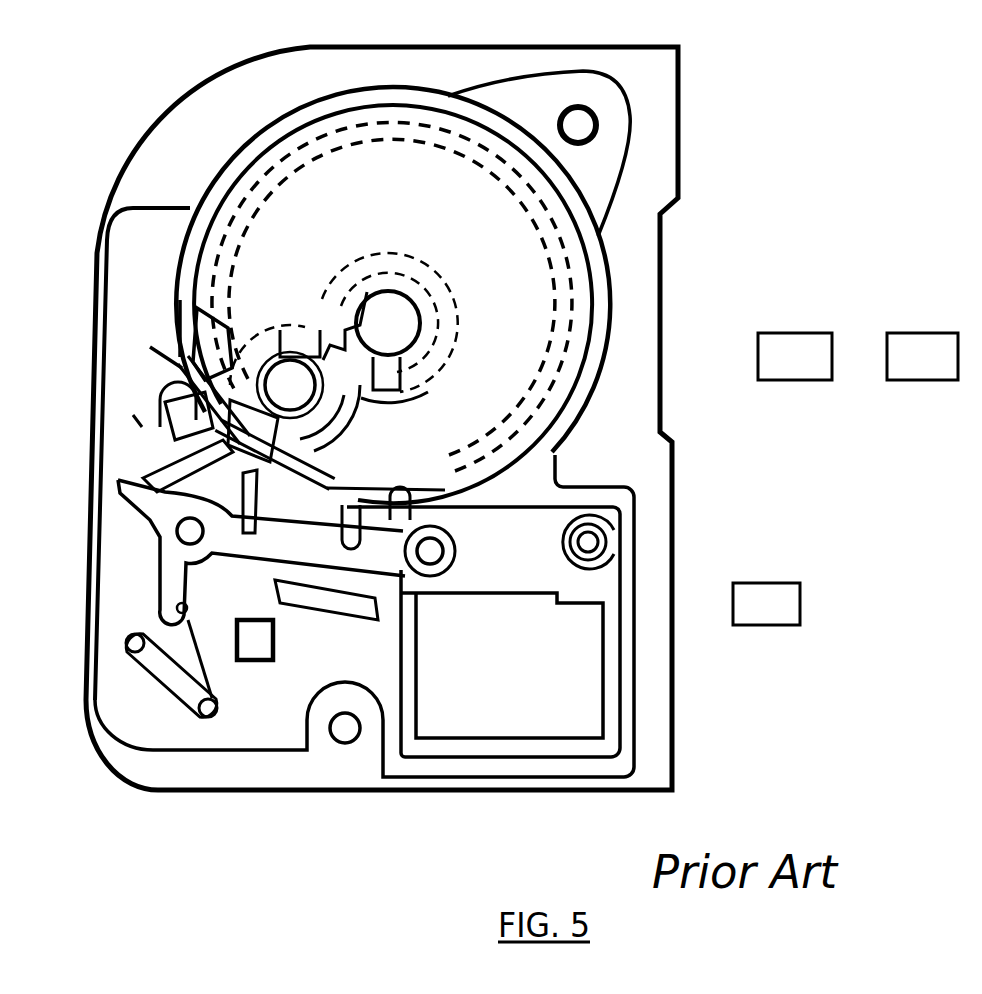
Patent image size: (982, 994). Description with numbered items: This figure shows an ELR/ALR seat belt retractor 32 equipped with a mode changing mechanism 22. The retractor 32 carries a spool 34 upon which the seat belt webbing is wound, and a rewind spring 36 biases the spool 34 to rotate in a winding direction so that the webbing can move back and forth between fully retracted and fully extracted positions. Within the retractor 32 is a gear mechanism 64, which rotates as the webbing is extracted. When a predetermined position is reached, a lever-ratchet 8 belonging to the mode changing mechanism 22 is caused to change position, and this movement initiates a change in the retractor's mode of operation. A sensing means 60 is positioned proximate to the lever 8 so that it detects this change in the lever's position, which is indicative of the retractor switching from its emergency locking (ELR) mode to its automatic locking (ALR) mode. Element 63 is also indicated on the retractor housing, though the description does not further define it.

The lever-ratchet 8 is at (303, 540).
The mode changing mechanism 22 is at (610, 273).
The seat belt retractor 32 is at (683, 95).
The spool 34 is at (660, 355).
The rewind spring 36 is at (832, 355).
The sensing means 60 is at (255, 662).
The housing side wall 63 is at (672, 603).
The gear mechanism 64 is at (193, 310).